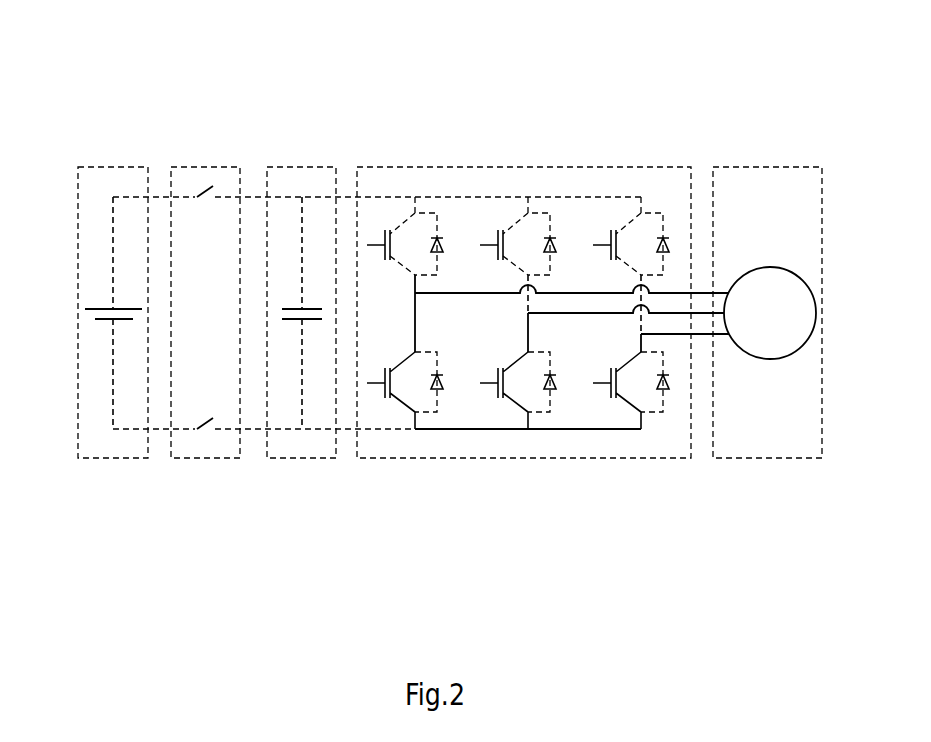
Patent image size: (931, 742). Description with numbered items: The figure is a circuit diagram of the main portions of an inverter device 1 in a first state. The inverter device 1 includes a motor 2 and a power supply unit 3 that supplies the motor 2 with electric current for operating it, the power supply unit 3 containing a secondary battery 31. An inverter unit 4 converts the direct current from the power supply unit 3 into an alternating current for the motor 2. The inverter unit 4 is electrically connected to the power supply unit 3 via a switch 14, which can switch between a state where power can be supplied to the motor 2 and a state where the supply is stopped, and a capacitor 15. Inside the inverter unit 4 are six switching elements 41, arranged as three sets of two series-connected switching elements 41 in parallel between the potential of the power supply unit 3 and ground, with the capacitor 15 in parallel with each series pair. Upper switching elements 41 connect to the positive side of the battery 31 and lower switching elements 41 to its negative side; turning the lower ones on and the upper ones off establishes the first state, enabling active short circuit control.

The inverter device 1 is at (826, 54).
The motor 2 is at (792, 166).
The power supply unit 3 is at (100, 166).
The secondary battery 31 is at (102, 305).
The switch 14 is at (215, 166).
The capacitor 15 is at (310, 166).
The inverter unit 4 is at (668, 166).
The switching elements 41 is at (401, 216).